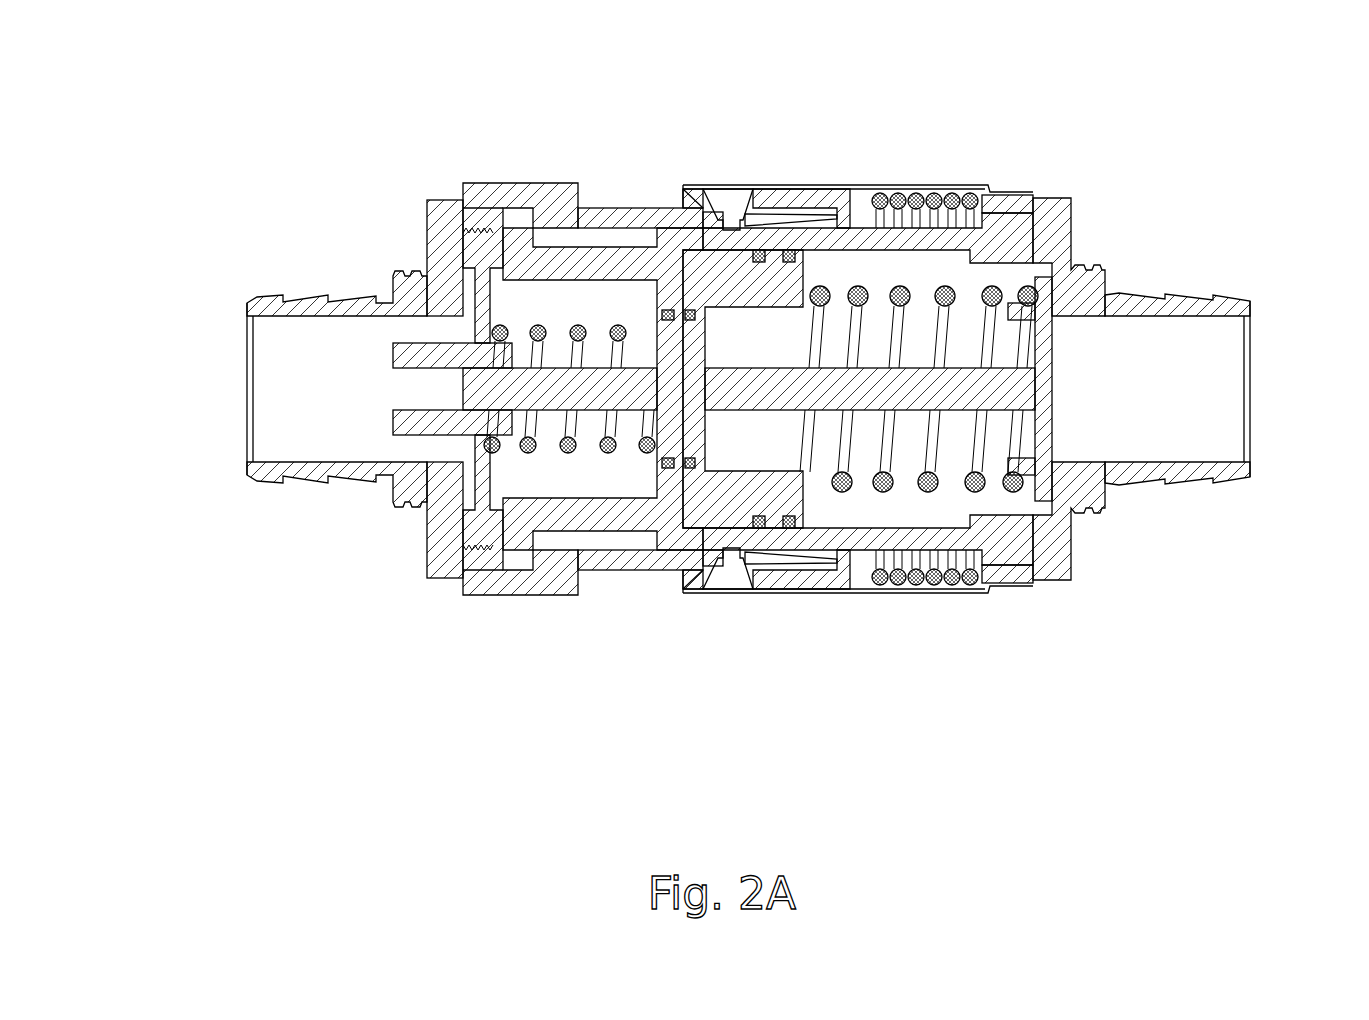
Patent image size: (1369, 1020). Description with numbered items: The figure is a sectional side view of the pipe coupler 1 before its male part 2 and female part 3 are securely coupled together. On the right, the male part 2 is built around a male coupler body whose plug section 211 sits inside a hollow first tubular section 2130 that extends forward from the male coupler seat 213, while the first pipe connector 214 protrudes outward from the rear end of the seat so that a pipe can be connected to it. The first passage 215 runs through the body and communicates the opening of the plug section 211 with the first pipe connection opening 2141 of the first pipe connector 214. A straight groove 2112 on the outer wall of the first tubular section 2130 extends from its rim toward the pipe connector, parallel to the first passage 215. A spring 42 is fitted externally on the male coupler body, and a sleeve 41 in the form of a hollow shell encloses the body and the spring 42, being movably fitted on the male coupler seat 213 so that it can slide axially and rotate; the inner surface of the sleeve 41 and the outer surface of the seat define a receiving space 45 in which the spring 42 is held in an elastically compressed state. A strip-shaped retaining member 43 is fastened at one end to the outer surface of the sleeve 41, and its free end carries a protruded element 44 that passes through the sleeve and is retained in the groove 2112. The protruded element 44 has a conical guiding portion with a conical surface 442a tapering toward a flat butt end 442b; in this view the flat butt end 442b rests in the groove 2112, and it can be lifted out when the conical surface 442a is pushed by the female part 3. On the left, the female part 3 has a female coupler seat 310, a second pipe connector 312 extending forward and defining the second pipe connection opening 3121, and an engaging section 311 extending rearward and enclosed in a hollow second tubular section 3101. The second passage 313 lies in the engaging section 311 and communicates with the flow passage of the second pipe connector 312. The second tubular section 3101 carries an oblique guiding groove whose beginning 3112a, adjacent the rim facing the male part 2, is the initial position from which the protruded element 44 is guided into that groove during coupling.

The pipe coupler 1 is at (1238, 126).
The male part 2 is at (1223, 283).
The female part 3 is at (261, 283).
The female coupler seat 310 is at (447, 200).
The second tubular section 3101 is at (613, 217).
The engaging section 311 is at (558, 527).
The second pipe connector 312 is at (320, 303).
The second pipe connection opening 3121 is at (247, 433).
The second passage 313 is at (555, 485).
The beginning of guiding groove 3112a is at (685, 203).
The sleeve 41 is at (842, 556).
The spring 42 is at (942, 190).
The retaining member 43 is at (803, 190).
The protruded element 44 is at (733, 193).
The receiving space 45 is at (867, 592).
The conical surface 442a is at (686, 200).
The flat butt end 442b is at (772, 553).
The plug section 211 is at (803, 515).
The groove 2112 is at (772, 240).
The male coupler seat 213 is at (1047, 585).
The first pipe connector 214 is at (1140, 306).
The first pipe connection opening 2141 is at (1250, 433).
The first passage 215 is at (1019, 511).
The first tubular section 2130 is at (1003, 187).